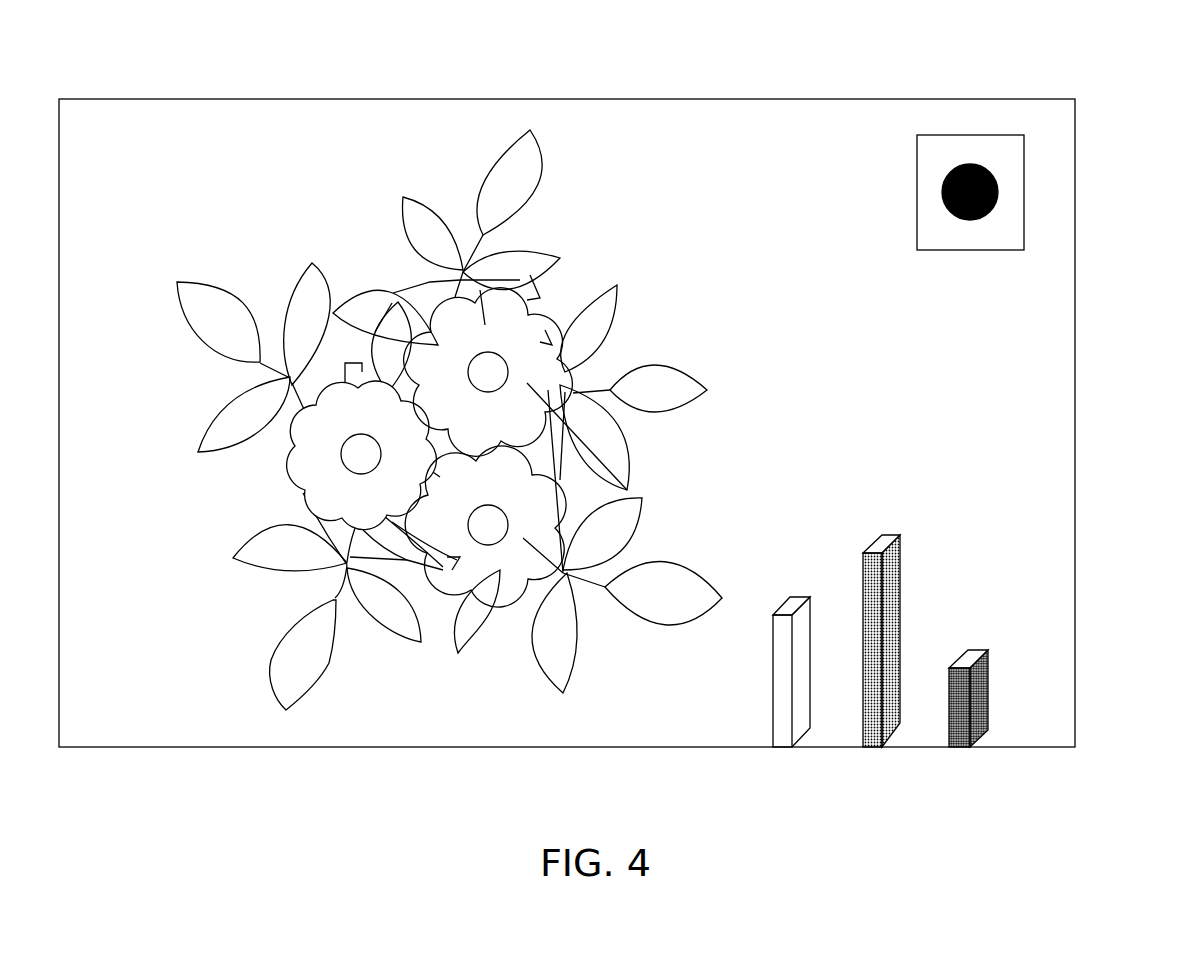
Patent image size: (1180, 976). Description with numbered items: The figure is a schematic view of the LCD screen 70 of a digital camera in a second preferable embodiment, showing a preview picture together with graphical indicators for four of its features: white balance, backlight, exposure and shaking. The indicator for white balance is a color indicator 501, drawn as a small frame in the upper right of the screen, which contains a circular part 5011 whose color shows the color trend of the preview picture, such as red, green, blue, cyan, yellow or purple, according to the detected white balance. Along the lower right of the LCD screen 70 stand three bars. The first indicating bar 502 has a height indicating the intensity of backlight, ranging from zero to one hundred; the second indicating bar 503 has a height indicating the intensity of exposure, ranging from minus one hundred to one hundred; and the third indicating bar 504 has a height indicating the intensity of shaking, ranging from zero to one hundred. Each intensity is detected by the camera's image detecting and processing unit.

The LCD screen 70 is at (1094, 240).
The color indicator 501 is at (1012, 120).
The circular part 5011 is at (960, 165).
The first indicating bar 502 is at (757, 680).
The second indicating bar 503 is at (915, 600).
The third indicating bar 504 is at (1003, 672).